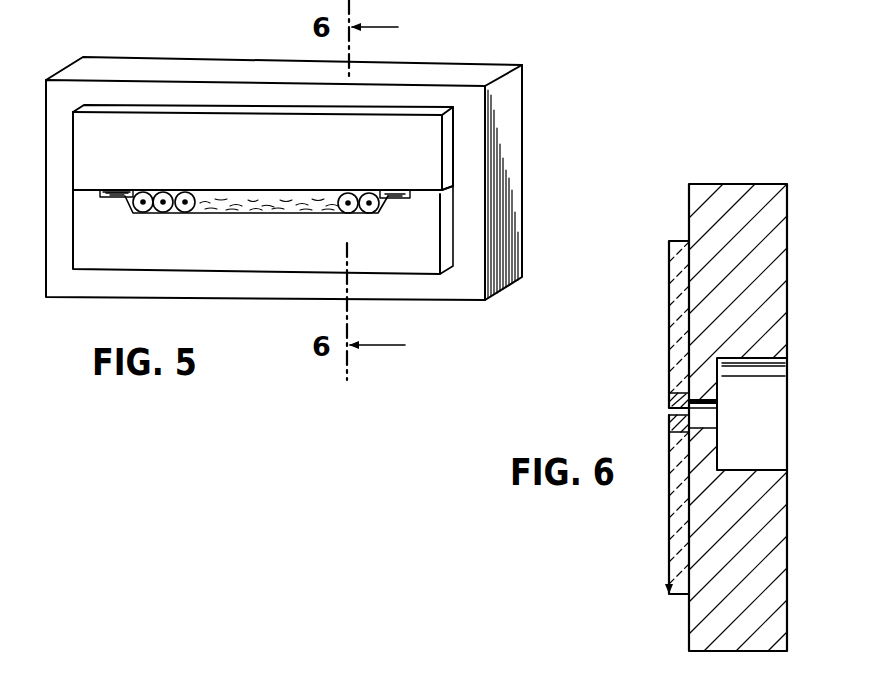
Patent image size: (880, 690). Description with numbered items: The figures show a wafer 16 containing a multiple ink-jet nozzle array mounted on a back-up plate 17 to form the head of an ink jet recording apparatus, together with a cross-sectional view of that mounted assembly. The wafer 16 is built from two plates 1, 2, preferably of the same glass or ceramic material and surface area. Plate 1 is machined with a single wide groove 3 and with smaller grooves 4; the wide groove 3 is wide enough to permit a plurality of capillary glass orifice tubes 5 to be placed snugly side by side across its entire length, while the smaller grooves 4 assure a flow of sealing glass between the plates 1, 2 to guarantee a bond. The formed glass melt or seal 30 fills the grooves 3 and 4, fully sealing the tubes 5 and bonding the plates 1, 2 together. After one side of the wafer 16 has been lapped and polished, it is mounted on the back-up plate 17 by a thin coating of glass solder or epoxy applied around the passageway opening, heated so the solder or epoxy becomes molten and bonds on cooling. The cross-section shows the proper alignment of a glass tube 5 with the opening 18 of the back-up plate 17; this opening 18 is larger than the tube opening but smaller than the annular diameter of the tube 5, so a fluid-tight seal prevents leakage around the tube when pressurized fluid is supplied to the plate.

In FIG. 5, the plate 1 is at (78, 218).
In FIG. 6, the plate 1 is at (672, 546).
In FIG. 5, the plate 2 is at (80, 132).
In FIG. 6, the plate 2 is at (674, 287).
In FIG. 5, the wide groove 3 is at (212, 215).
In FIG. 5, the smaller grooves 4 is at (116, 198).
In FIG. 5, the capillary glass orifice tubes 5 is at (162, 213).
In FIG. 6, the capillary glass orifice tubes 5 is at (672, 400).
In FIG. 5, the wafer 16 is at (452, 145).
In FIG. 6, the wafer 16 is at (662, 322).
In FIG. 5, the back-up plate 17 is at (515, 182).
In FIG. 6, the back-up plate 17 is at (765, 190).
In FIG. 6, the opening 18 is at (778, 406).
In FIG. 5, the glass melt or seal 30 is at (118, 195).